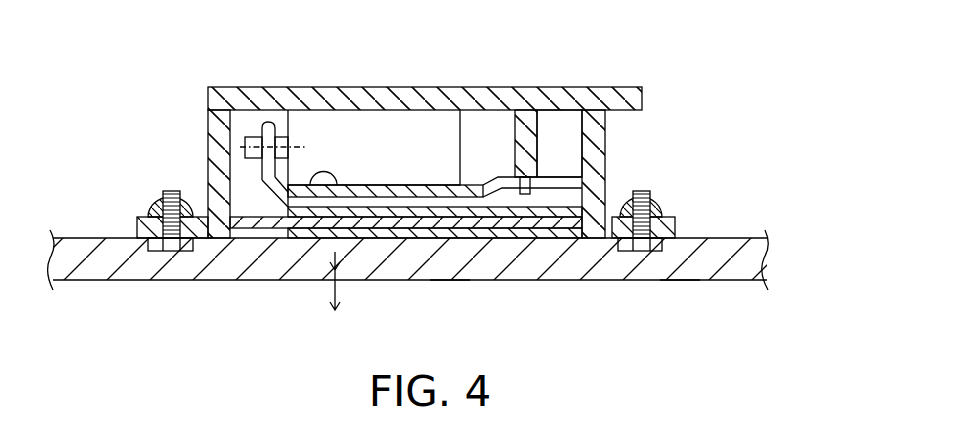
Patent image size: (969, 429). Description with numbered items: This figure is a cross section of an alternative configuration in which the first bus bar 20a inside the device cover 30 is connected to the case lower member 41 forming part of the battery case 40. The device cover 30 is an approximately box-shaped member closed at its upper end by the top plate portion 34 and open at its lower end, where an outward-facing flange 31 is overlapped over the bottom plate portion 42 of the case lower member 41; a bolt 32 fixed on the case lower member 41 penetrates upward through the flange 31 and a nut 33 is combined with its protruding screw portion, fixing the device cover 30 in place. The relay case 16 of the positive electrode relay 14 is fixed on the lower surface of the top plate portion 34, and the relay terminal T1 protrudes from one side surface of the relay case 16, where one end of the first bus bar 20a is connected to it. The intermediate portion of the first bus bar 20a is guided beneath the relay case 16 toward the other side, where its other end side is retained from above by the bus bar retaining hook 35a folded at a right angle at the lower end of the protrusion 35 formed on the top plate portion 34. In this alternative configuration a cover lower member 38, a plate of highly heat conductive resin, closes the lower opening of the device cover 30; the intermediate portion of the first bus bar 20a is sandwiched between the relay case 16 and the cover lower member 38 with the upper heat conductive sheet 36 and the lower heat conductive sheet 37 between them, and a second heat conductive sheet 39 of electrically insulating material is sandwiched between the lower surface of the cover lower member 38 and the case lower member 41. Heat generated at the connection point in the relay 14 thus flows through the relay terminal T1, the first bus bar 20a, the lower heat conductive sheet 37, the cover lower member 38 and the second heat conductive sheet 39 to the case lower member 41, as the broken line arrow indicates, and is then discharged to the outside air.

The device cover 30 is at (580, 87).
The top plate portion 34 is at (382, 87).
The protrusion 35 is at (517, 118).
The positive electrode relay 14 is at (418, 122).
The lower heat conductive sheet 37 is at (432, 207).
The relay case 16 is at (310, 110).
The relay terminal T1 is at (248, 87).
The upper heat conductive sheet 36 is at (310, 190).
The first bus bar 20a is at (503, 197).
The bus bar retaining hook 35a is at (527, 197).
The cover lower member 38 is at (392, 222).
The second heat conductive sheet 39 is at (362, 228).
The flange 31 is at (137, 227).
The nut 33 is at (152, 193).
The bolt 32 is at (172, 252).
The battery case 40 is at (614, 282).
The case lower member 41 is at (680, 282).
The bottom plate portion 42 is at (447, 282).